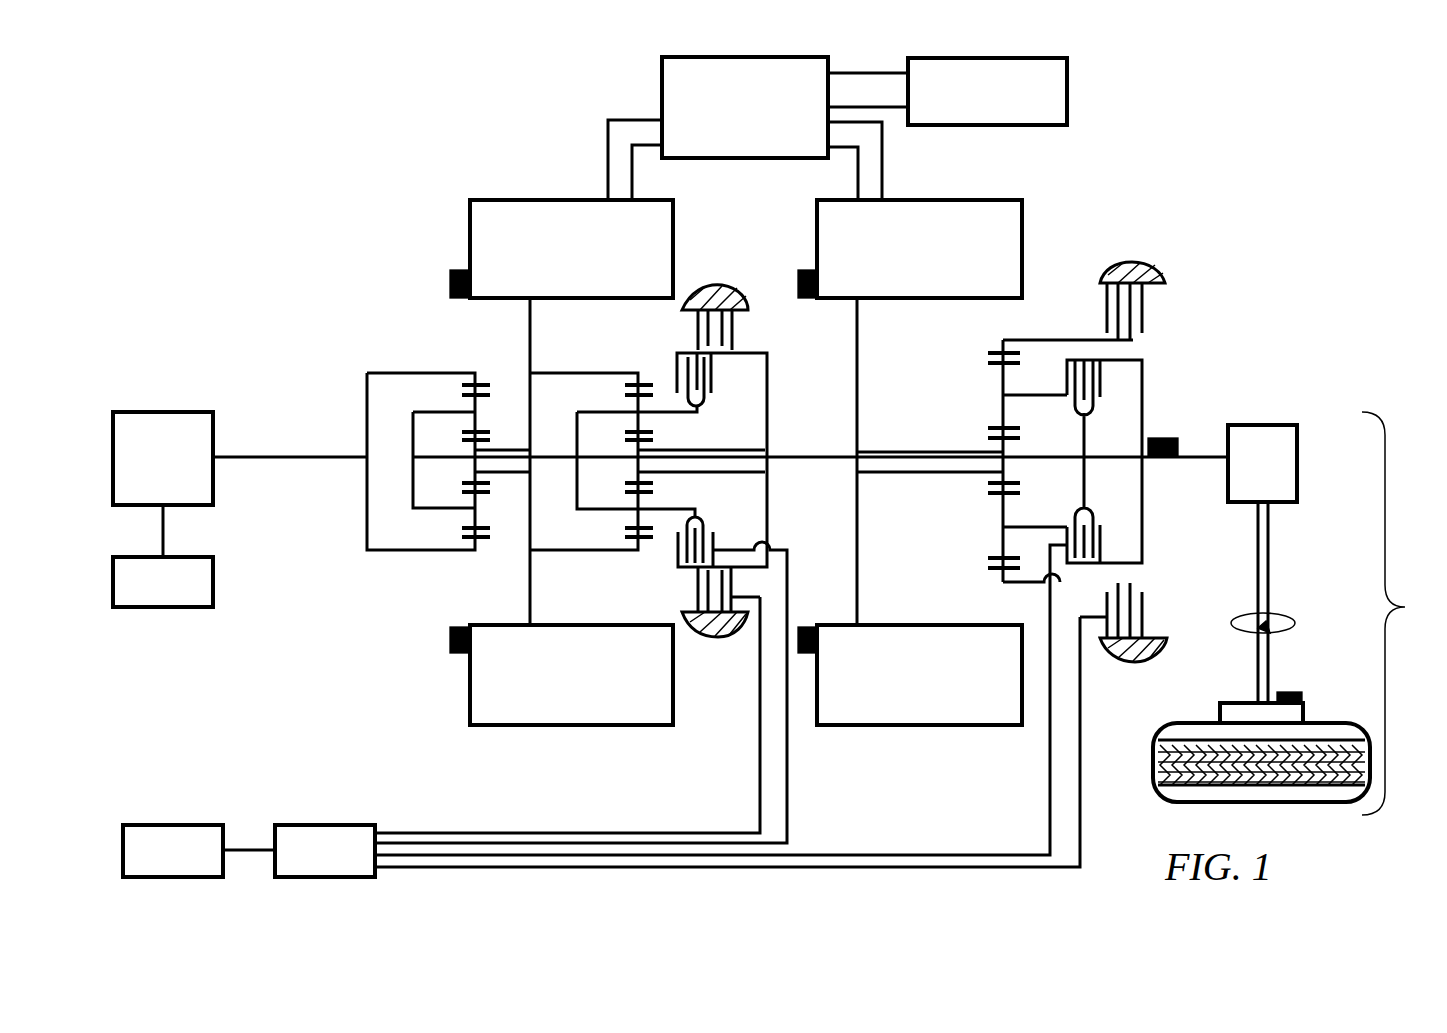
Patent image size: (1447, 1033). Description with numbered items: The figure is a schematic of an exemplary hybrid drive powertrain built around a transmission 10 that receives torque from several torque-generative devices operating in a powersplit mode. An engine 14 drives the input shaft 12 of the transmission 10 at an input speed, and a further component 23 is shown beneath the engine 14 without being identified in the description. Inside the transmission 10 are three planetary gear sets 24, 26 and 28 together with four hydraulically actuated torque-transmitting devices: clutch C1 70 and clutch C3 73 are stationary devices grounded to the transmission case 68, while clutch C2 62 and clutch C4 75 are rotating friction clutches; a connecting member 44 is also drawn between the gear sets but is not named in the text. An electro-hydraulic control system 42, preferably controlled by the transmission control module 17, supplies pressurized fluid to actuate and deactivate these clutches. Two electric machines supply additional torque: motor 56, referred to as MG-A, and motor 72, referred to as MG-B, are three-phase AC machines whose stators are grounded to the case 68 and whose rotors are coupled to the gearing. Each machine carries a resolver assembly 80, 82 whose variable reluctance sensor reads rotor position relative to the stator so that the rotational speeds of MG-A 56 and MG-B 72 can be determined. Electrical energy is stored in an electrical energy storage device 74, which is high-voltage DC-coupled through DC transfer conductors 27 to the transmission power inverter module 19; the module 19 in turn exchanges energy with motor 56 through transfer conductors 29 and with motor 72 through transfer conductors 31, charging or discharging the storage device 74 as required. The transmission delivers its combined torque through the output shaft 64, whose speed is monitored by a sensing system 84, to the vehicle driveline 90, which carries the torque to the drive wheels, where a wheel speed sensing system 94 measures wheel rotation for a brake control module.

The transmission 10 is at (430, 160).
The input shaft 12 is at (328, 457).
The engine 14 is at (170, 412).
The transmission control module 17 is at (163, 830).
The transmission power inverter module 19 is at (662, 78).
The engine controller 23 is at (210, 600).
The planetary gear set 24 is at (465, 365).
The planetary gear set 26 is at (633, 365).
The DC transfer conductors 27 is at (848, 73).
The planetary gear set 28 is at (995, 340).
The transfer conductors 29 is at (608, 152).
The transfer conductors 31 is at (882, 150).
The electro-hydraulic control system 42 is at (292, 830).
The intermediate shaft member 44 is at (575, 495).
The motor 56 is at (470, 230).
The clutch C2 62 is at (1105, 400).
The output shaft 64 is at (1197, 460).
The transmission case 68 is at (718, 290).
The clutch C1 70 is at (1095, 305).
The motor 72 is at (1022, 225).
The clutch C3 73 is at (740, 330).
The electrical energy storage device 74 is at (1068, 80).
The clutch C4 75 is at (713, 385).
The resolver assembly 80 is at (450, 283).
The resolver assembly 82 is at (805, 270).
The sensing system 84 is at (1165, 437).
The driveline 90 is at (1294, 613).
The wheel speed sensing system 94 is at (1292, 693).